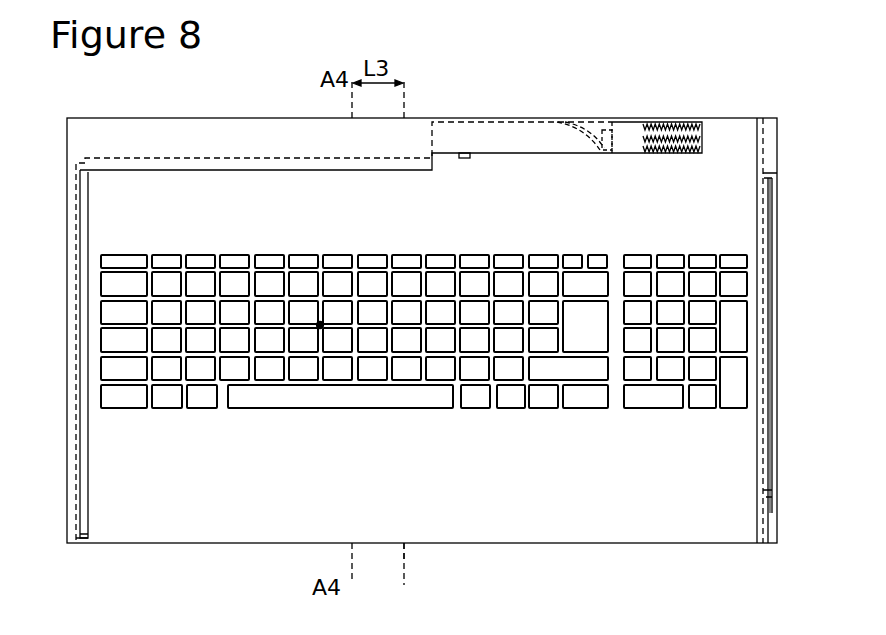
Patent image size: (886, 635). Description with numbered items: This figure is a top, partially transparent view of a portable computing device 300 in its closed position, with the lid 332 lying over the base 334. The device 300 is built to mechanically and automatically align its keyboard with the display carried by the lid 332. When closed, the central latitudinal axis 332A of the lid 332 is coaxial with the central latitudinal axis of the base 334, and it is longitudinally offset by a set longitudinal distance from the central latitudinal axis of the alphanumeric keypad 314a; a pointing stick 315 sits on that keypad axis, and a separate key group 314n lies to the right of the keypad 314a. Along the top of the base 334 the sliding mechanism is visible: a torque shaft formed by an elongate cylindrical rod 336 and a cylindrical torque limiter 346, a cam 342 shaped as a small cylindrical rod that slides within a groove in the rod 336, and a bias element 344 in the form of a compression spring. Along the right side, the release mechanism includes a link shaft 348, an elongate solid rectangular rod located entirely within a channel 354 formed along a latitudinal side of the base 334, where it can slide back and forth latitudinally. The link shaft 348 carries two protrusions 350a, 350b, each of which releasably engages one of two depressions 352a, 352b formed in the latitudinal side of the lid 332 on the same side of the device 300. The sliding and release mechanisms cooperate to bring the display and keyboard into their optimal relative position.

The computing device 300 is at (724, 110).
The alphanumeric keypad 314a is at (611, 408).
The numeric key group 314n is at (749, 408).
The pointing stick 315 is at (320, 326).
The lid 332 is at (83, 137).
The central latitudinal axis of the lid 332A is at (457, 332).
The base 334 is at (152, 527).
The rod 336 is at (517, 140).
The cam 342 is at (470, 165).
The bias element 344 is at (660, 140).
The torque limiter 346 is at (625, 137).
The link shaft 348 is at (770, 297).
The protrusion 350a is at (765, 174).
The protrusion 350b is at (766, 490).
The depression 352a is at (755, 191).
The depression 352b is at (750, 475).
The channel 354 is at (772, 538).